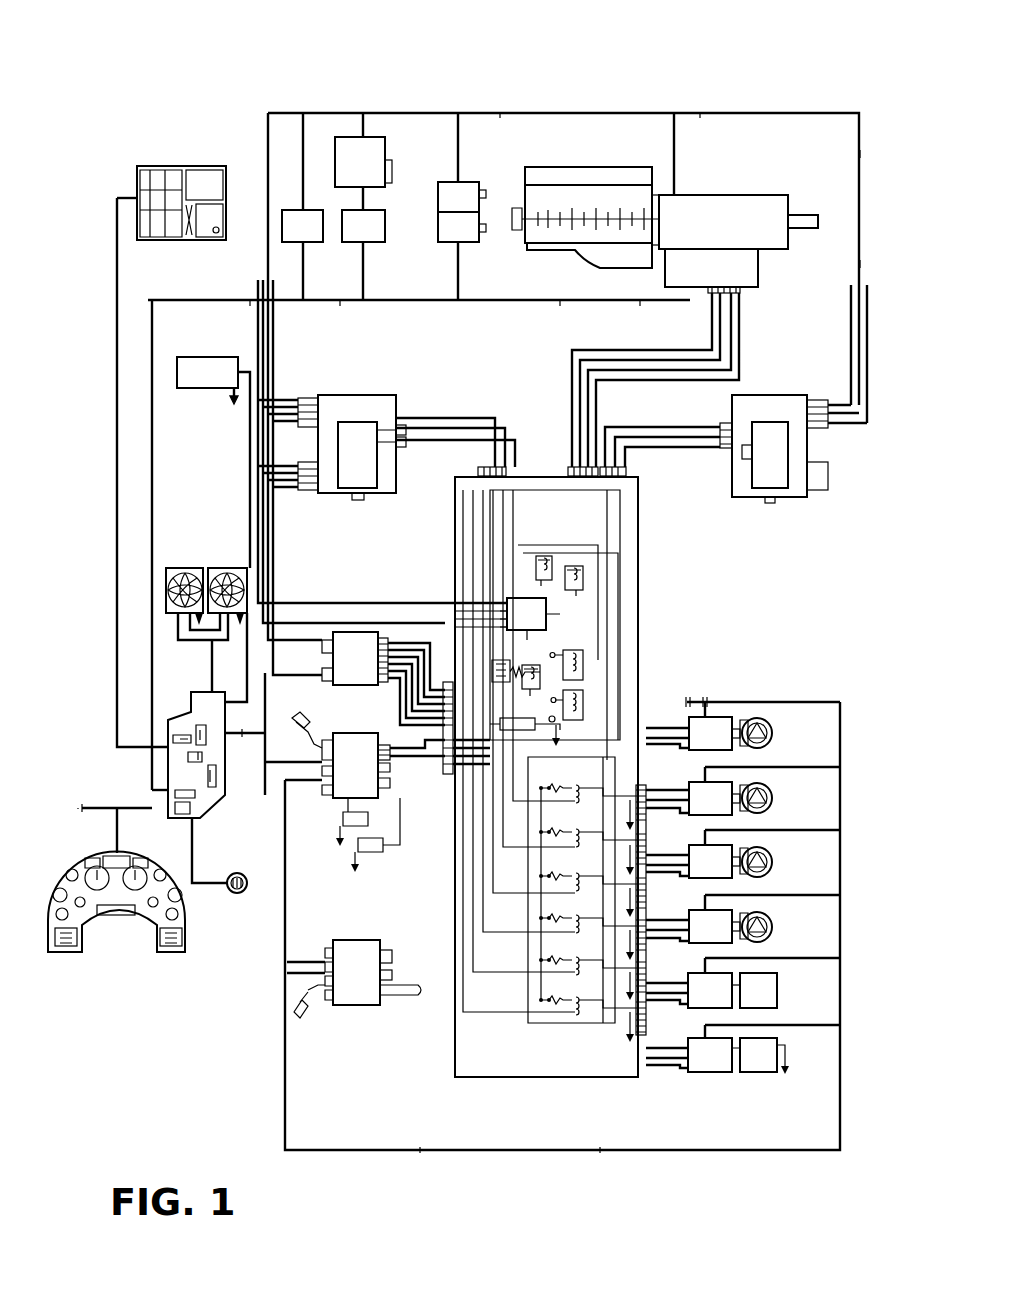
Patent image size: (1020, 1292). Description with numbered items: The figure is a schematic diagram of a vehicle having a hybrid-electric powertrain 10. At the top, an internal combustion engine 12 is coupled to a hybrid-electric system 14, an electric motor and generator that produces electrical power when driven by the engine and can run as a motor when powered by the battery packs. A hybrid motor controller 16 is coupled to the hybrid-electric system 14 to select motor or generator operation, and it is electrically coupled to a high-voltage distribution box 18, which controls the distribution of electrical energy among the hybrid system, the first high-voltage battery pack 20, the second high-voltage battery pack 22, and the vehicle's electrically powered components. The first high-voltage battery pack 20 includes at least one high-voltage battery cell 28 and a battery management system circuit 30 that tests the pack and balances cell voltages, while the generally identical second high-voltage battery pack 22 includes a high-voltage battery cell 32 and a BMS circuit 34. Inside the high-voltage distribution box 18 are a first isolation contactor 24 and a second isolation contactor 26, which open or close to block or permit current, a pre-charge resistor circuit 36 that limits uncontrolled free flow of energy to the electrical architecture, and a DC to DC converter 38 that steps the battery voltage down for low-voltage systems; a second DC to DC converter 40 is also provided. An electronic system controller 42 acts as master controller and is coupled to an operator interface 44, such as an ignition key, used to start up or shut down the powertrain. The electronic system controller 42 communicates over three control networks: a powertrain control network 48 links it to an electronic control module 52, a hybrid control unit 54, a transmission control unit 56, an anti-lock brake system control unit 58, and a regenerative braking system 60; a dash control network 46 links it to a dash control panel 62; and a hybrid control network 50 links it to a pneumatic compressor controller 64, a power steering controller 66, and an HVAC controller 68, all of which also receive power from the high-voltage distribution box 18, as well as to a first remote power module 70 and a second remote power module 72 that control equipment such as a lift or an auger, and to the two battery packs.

The hybrid-electric powertrain 10 is at (790, 60).
The internal combustion engine 12 is at (608, 166).
The hybrid-electric system 14 is at (735, 192).
The hybrid motor controller 16 is at (760, 260).
The high-voltage distribution box 18 is at (648, 555).
The first high-voltage battery pack 20 is at (332, 392).
The second high-voltage battery pack 22 is at (774, 392).
The first isolation contactor 24 is at (586, 662).
The second isolation contactor 26 is at (586, 698).
The high-voltage battery cell 28 is at (380, 450).
The battery management system circuit 30 is at (380, 486).
The high-voltage battery cell 32 is at (752, 455).
The BMS circuit 34 is at (752, 485).
The pre-charge resistor circuit 36 is at (498, 666).
The DC to DC converter 38 is at (505, 600).
The second DC to DC converter 40 is at (700, 1078).
The electronic system controller 42 is at (180, 718).
The operator interface 44 is at (239, 895).
The dash control network 46 is at (117, 680).
The powertrain control network 48 is at (155, 448).
The hybrid control network 50 is at (242, 738).
The electronic control module 52 is at (486, 234).
The hybrid control unit 54 is at (443, 184).
The transmission control unit 56 is at (292, 206).
The anti-lock brake system control unit 58 is at (378, 245).
The regenerative braking system 60 is at (345, 134).
The dash control panel 62 is at (205, 163).
The pneumatic compressor controller 64 is at (770, 725).
The power steering controller 66 is at (775, 800).
The HVAC controller 68 is at (775, 864).
The first remote power module 70 is at (372, 946).
The second remote power module 72 is at (355, 745).